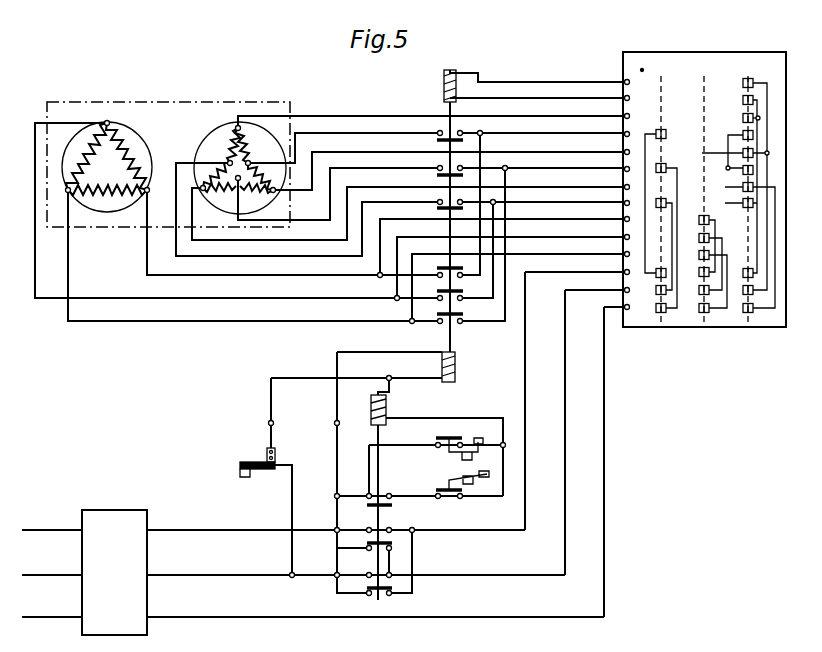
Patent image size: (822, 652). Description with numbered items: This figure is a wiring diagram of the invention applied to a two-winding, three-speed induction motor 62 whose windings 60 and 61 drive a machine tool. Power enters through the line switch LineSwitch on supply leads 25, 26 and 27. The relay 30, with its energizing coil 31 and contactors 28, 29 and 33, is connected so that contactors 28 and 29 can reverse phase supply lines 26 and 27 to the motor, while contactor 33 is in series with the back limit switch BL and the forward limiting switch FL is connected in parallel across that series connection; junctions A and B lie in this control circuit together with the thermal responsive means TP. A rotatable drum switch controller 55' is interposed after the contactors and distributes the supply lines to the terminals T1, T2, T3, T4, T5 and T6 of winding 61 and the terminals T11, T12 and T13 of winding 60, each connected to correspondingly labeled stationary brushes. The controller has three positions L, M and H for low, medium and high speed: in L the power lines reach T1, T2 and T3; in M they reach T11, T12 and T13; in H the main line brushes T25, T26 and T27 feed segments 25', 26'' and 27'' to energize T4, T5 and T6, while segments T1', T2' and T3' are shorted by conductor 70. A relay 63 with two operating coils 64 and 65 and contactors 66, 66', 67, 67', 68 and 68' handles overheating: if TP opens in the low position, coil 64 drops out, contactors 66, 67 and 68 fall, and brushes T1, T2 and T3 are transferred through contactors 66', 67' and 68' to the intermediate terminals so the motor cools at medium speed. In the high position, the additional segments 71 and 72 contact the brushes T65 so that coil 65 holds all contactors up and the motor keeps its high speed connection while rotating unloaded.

The rotatable drum switch controller 55' is at (704, 180).
The motor winding 60 is at (114, 134).
The motor winding 61 is at (217, 138).
The motor 62 is at (168, 156).
The relay 63 is at (447, 338).
The operating coil 64 is at (456, 368).
The operating coil 65 is at (444, 76).
The contactor 66 is at (441, 203).
The contactor 67 is at (453, 244).
The contactor 68 is at (450, 249).
The contactor 66' is at (439, 269).
The contactor 68' is at (440, 291).
The contactor 67' is at (440, 314).
The short-circuiting conductor 70 is at (742, 208).
The segment 71 is at (743, 83).
The segment 72 is at (743, 100).
The segment 27'' is at (739, 118).
The segment 26'' is at (720, 153).
The segment 25' is at (741, 243).
The segment T1' is at (732, 150).
The segment T2' is at (732, 200).
The segment T3' is at (732, 170).
The supply lead 25 is at (313, 608).
The phase supply line 26 is at (293, 565).
The phase supply line 27 is at (273, 522).
The contactor 28 is at (376, 593).
The contactor 29 is at (369, 548).
The relay 30 is at (381, 458).
The energizing coil 31 is at (386, 403).
The contactor 33 is at (392, 506).
The thermal responsive means TP is at (250, 452).
The forward limiting switch FL is at (446, 437).
The back limit switch BL is at (440, 488).
The junction A is at (334, 422).
The junction B is at (274, 424).
The low speed position L is at (661, 191).
The medium speed position M is at (712, 191).
The high speed position H is at (747, 191).
The line switch LineSwitch is at (127, 496).
The motor terminal T1 is at (438, 143).
The motor terminal T2 is at (403, 201).
The motor terminal T3 is at (426, 187).
The motor terminal T4 is at (420, 116).
The motor terminal T5 is at (446, 177).
The motor terminal T6 is at (405, 206).
The motor terminal T11 is at (387, 233).
The motor terminal T12 is at (332, 203).
The motor terminal T13 is at (348, 256).
The stationary brushes T65 is at (540, 92).
The stationary main line brush T25 is at (609, 455).
The stationary main line brush T26 is at (597, 425).
The stationary main line brush T27 is at (577, 394).